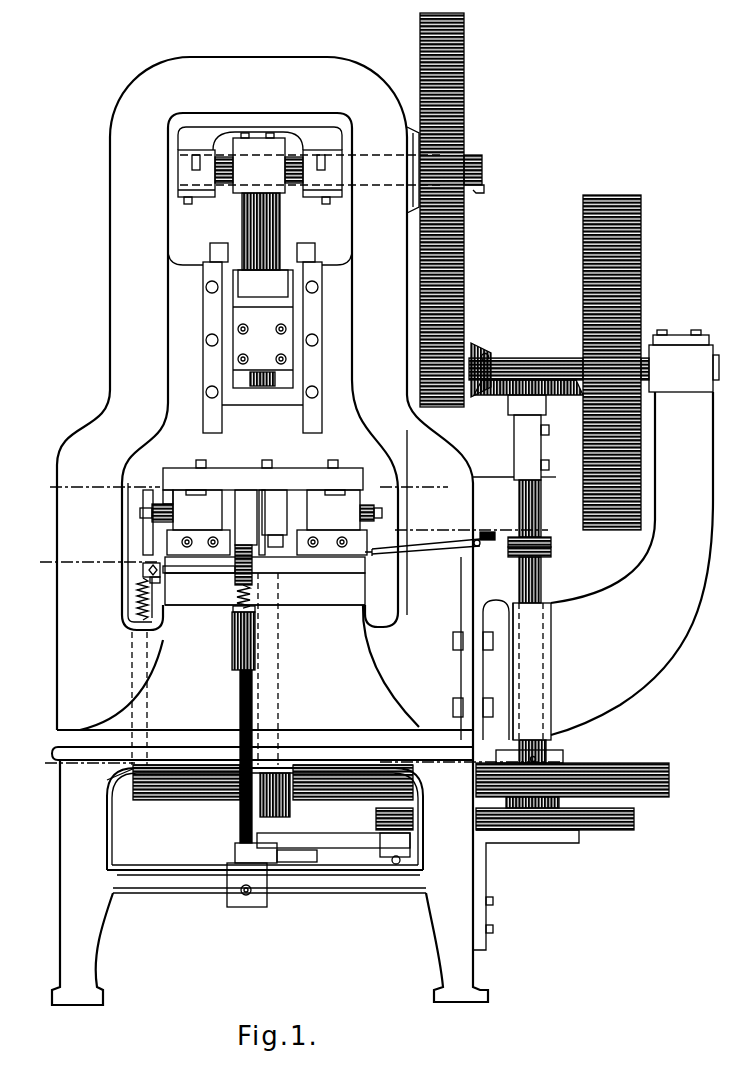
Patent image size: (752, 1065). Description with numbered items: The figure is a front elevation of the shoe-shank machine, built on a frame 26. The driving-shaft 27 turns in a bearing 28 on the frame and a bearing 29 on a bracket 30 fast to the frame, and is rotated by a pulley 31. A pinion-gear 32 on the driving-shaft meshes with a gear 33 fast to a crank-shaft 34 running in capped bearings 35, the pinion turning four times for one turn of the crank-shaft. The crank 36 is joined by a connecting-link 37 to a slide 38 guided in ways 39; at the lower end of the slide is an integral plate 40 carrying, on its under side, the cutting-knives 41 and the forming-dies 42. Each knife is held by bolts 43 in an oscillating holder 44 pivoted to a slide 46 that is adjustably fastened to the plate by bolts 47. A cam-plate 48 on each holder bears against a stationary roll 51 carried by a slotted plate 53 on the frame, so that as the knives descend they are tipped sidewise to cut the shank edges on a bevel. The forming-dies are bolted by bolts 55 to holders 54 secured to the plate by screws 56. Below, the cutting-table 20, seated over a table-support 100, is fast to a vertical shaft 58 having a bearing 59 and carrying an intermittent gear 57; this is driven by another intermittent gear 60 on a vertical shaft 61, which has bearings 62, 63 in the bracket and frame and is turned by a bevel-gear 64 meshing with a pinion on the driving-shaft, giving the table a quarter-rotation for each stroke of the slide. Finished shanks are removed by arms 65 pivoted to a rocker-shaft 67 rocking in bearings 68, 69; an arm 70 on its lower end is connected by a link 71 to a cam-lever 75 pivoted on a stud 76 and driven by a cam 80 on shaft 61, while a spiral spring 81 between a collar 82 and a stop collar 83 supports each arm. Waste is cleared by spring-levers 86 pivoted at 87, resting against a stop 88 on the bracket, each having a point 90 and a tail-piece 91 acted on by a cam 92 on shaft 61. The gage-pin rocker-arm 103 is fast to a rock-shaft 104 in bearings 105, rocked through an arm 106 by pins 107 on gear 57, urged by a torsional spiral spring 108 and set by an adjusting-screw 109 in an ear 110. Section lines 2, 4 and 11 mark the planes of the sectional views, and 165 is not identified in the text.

The section line 2 2 is at (246, 488).
The section line 4 4 is at (606, 750).
The section line 11 11 is at (294, 549).
The cutting-table 20 is at (265, 589).
The frame 26 is at (110, 314).
The driving-shaft 27 is at (528, 357).
The bearing 28 is at (381, 348).
The bearing 29 is at (680, 345).
The bracket 30 is at (655, 635).
The pulley 31 is at (586, 268).
The pinion-gear 32 is at (476, 343).
The gear 33 is at (464, 246).
The crank-shaft 34 is at (483, 172).
The capped bearings 35 is at (190, 205).
The crank 36 is at (292, 160).
The connecting-link 37 is at (280, 232).
The slide 38 is at (322, 256).
The ways 39 is at (322, 312).
The plate 40 is at (263, 479).
The cutting-knives 41 is at (308, 560).
The forming-dies 42 is at (262, 554).
The bolts 43 is at (333, 510).
The oscillating holder 44 is at (226, 520).
The slide 46 is at (197, 510).
The bolts 47 is at (208, 468).
The cam-plate 48 is at (170, 500).
The roll 51 is at (150, 520).
The slotted plate 53 is at (140, 507).
The holders 54 is at (262, 518).
The bolts 55 is at (270, 543).
The screws 56 is at (270, 466).
The intermittent gear 57 is at (190, 803).
The vertical shaft 58 is at (272, 699).
The bearing 59 is at (295, 661).
The intermittent gear 60 is at (669, 778).
The vertical shaft 61 is at (541, 579).
The bearing 62 is at (548, 672).
The bearing 63 is at (514, 440).
The bevel-gear 64 is at (556, 394).
The arms 65 is at (240, 560).
The rocker-shaft 67 is at (240, 697).
The bearing 68 is at (238, 642).
The bearing 69 is at (235, 868).
The arm 70 is at (234, 852).
The link 71 is at (292, 858).
The cam-lever 75 is at (320, 840).
The stud 76 is at (393, 864).
The cam 80 is at (634, 821).
The spiral spring 81 is at (240, 592).
The collar 82 is at (256, 611).
The collar 83 is at (232, 556).
The spring-levers 86 is at (455, 549).
The pivot 87 is at (488, 533).
The stop 88 is at (480, 590).
The point 90 is at (374, 554).
The tail-piece 91 is at (552, 541).
The cam 92 is at (552, 552).
The table-support 100 is at (268, 656).
The rocker-arm 103 is at (145, 595).
The rock-shaft 104 is at (140, 680).
The bearings 105 is at (137, 650).
The arm 106 is at (115, 769).
The pins 107 is at (273, 767).
The torsional spiral spring 108 is at (140, 618).
The adjusting-screw 109 is at (150, 578).
The ear 110 is at (143, 568).
The pinion bearing 165 is at (488, 357).